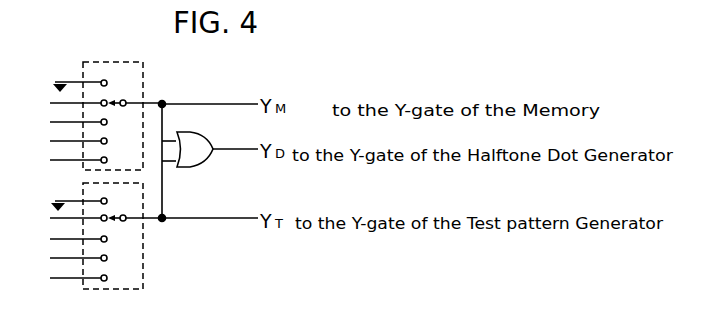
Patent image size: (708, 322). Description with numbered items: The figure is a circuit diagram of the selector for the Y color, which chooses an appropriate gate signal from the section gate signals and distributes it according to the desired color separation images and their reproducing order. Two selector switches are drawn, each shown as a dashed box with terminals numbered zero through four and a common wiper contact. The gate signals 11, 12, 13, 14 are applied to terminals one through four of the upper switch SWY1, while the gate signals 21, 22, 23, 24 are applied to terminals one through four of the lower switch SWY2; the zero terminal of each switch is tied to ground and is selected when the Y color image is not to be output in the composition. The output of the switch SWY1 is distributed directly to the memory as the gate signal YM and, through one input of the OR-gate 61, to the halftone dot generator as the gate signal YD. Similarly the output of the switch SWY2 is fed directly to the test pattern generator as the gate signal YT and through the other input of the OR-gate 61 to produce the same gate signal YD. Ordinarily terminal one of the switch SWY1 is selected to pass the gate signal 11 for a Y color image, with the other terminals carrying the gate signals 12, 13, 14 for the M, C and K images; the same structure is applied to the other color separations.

The gate signal 11 is at (64, 103).
The gate signal 12 is at (64, 122).
The gate signal 13 is at (64, 141).
The gate signal 14 is at (64, 160).
The gate signal 21 is at (62, 219).
The gate signal 22 is at (62, 239).
The gate signal 23 is at (62, 258).
The gate signal 24 is at (62, 278).
The OR-gate 61 is at (197, 136).
The switch SWY1 is at (143, 82).
The switch SWY2 is at (143, 283).